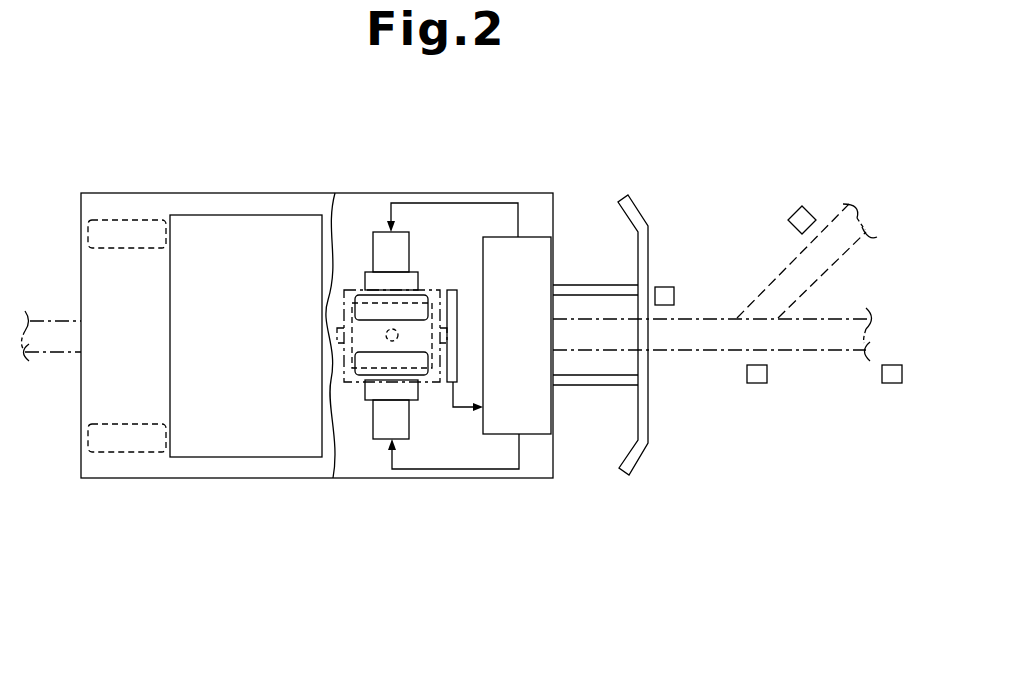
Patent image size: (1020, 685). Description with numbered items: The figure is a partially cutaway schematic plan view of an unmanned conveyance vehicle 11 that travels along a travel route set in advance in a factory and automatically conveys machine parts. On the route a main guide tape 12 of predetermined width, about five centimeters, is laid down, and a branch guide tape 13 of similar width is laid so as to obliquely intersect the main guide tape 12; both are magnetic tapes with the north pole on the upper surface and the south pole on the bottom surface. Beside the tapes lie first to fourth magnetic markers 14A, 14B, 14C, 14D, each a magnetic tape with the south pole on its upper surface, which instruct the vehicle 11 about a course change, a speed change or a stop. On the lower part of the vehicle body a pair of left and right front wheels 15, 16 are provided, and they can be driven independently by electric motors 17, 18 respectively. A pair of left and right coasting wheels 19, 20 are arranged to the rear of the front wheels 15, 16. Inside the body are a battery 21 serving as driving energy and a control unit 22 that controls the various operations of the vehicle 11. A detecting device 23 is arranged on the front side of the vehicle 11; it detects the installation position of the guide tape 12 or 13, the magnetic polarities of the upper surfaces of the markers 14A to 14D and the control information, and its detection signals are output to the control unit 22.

The unmanned conveyance vehicle 11 is at (301, 188).
The main guide tape 12 is at (703, 352).
The branch guide tape 13 is at (775, 280).
The first magnetic marker 14A is at (665, 287).
The second magnetic marker 14B is at (798, 217).
The third magnetic marker 14C is at (756, 383).
The fourth magnetic marker 14D is at (890, 383).
The front wheel 15 is at (365, 308).
The front wheel 16 is at (363, 362).
The electric motor 17 is at (403, 257).
The electric motor 18 is at (382, 433).
The coasting wheel 19 is at (135, 230).
The coasting wheel 20 is at (135, 442).
The battery 21 is at (224, 238).
The control unit 22 is at (536, 247).
The detecting device 23 is at (473, 478).